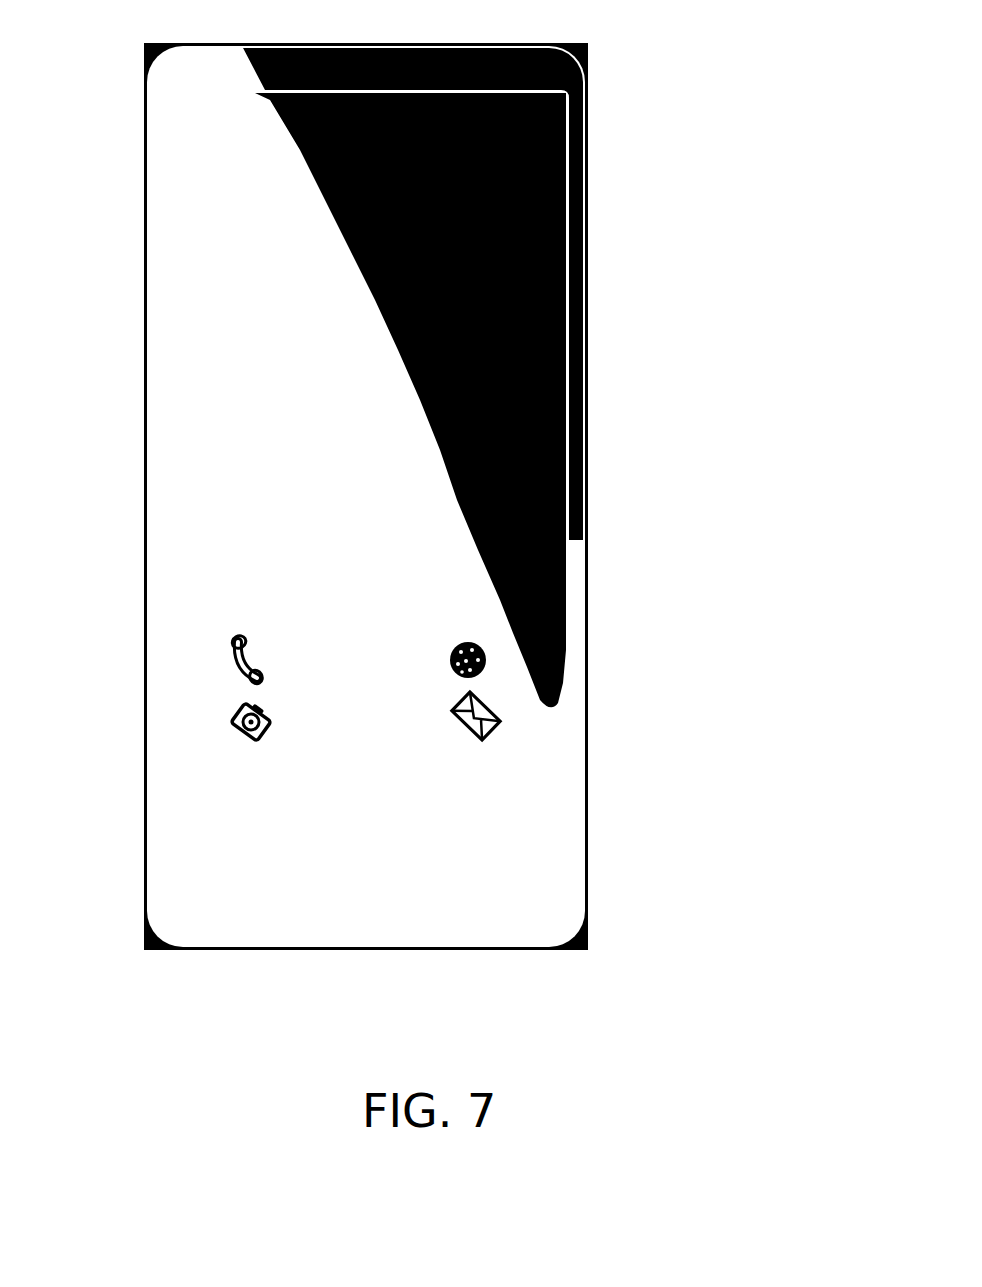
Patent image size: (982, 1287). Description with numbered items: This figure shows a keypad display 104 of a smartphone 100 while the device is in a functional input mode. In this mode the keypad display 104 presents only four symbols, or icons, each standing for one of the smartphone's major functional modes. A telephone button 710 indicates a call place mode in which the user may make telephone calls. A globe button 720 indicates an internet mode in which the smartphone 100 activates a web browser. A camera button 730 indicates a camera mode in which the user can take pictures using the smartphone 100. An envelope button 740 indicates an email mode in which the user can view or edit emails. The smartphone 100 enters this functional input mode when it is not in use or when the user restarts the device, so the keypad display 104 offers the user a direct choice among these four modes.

The smartphone 100 is at (661, 85).
The keypad display 104 is at (642, 796).
The telephone button 710 is at (225, 655).
The globe button 720 is at (505, 655).
The camera button 730 is at (225, 712).
The envelope button 740 is at (512, 732).